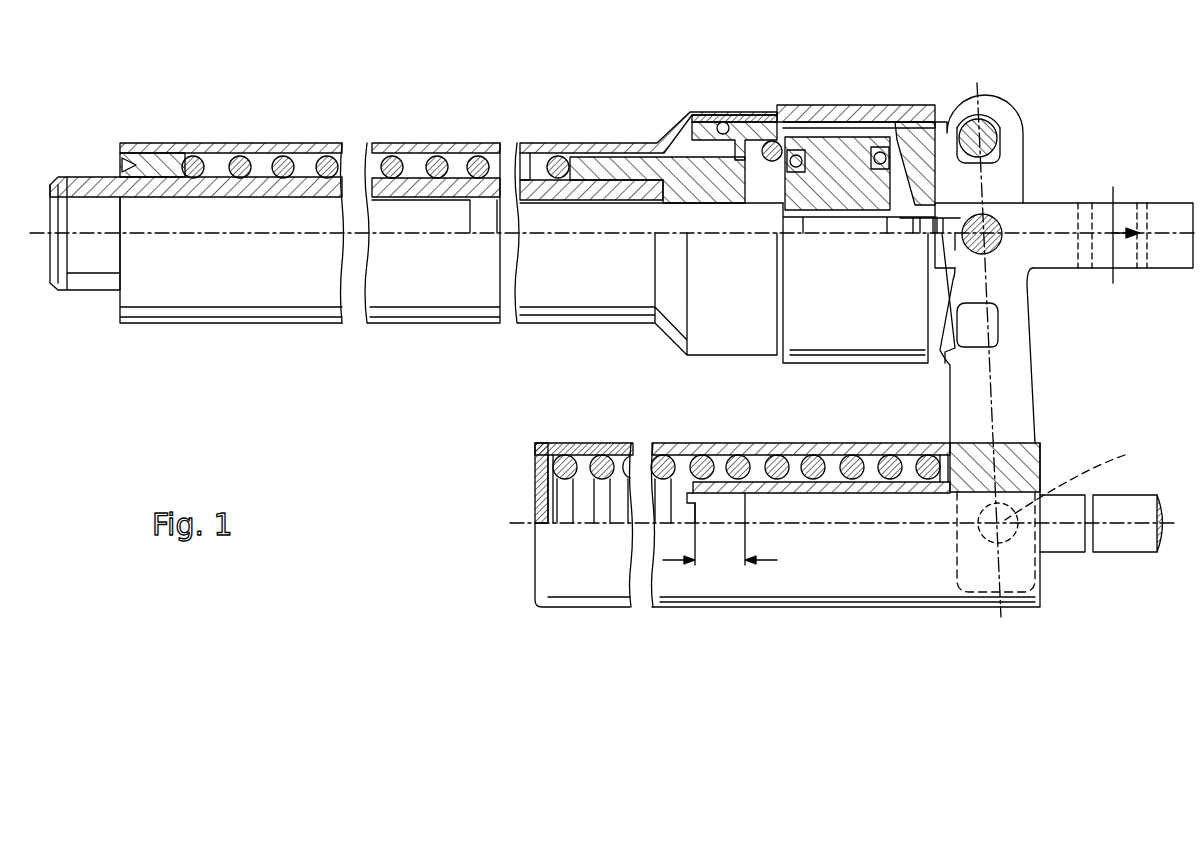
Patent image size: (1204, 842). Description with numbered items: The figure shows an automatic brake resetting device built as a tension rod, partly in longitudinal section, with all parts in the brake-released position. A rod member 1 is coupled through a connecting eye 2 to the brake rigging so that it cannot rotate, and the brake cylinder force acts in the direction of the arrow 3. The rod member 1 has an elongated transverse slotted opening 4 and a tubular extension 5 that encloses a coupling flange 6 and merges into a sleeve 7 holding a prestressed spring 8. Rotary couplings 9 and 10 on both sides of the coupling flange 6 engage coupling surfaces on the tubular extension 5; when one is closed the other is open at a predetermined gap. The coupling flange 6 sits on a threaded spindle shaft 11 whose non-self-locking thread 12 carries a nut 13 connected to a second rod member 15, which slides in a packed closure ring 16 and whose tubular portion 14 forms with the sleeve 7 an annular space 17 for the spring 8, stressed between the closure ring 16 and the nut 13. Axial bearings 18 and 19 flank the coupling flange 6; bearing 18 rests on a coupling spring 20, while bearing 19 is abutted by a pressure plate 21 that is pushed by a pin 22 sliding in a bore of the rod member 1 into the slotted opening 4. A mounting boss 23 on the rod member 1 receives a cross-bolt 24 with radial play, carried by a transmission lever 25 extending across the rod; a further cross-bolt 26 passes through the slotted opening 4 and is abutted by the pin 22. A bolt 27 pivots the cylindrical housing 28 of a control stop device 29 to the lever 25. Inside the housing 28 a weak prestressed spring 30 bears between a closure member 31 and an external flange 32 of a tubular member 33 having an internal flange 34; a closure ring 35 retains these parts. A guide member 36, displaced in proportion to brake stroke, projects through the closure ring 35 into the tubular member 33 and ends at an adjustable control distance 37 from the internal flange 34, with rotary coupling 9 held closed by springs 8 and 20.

The rod member 1 is at (1057, 217).
The connecting eye 2 is at (1125, 210).
The arrow 3 is at (1113, 283).
The transverse slotted opening 4 is at (972, 217).
The tubular extension 5 is at (703, 115).
The coupling flange 6 is at (833, 130).
The sleeve 7 is at (318, 147).
The prestressed spring 8 is at (283, 157).
The rotary coupling 9 is at (860, 118).
The rotary coupling 10 is at (787, 113).
The threaded spindle shaft 11 is at (533, 213).
The non-self-locking thread 12 is at (478, 202).
The nut 13 is at (587, 147).
The tubular portion 14 is at (218, 185).
The second rod member 15 is at (87, 243).
The closure ring 16 is at (165, 155).
The annular space 17 is at (410, 160).
The axial bearing 18 is at (727, 127).
The axial bearing 19 is at (887, 127).
The coupling spring 20 is at (700, 118).
The pressure plate 21 is at (927, 132).
The pin 22 is at (920, 227).
The mounting boss 23 is at (1013, 133).
The cross-bolt 24 is at (983, 133).
The transmission lever 25 is at (1022, 370).
The cross-bolt 26 is at (952, 240).
The bolt 27 is at (1049, 508).
The cylindrical housing 28 is at (617, 450).
The control stop device 29 is at (757, 443).
The prestressed spring 30 is at (562, 458).
The closure member 31 is at (543, 487).
The external flange 32 is at (947, 460).
The tubular member 33 is at (832, 480).
The internal flange 34 is at (692, 497).
The closure ring 35 is at (1020, 470).
The guide member 36 is at (1133, 508).
The control distance 37 is at (717, 562).